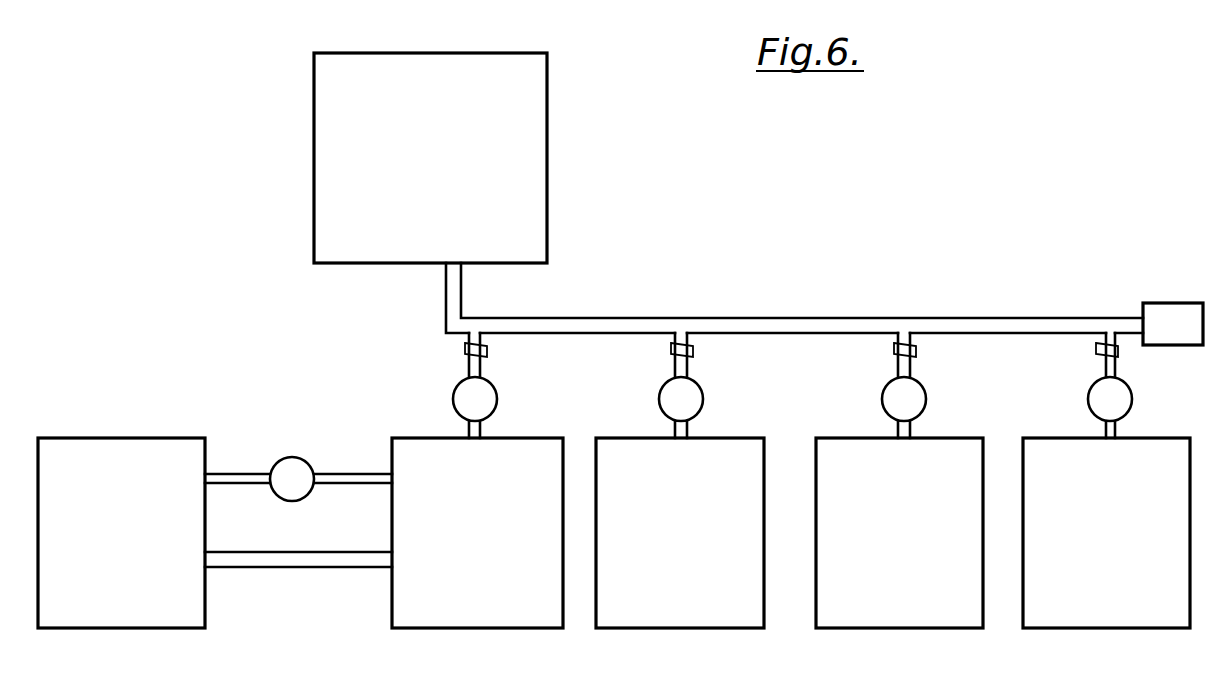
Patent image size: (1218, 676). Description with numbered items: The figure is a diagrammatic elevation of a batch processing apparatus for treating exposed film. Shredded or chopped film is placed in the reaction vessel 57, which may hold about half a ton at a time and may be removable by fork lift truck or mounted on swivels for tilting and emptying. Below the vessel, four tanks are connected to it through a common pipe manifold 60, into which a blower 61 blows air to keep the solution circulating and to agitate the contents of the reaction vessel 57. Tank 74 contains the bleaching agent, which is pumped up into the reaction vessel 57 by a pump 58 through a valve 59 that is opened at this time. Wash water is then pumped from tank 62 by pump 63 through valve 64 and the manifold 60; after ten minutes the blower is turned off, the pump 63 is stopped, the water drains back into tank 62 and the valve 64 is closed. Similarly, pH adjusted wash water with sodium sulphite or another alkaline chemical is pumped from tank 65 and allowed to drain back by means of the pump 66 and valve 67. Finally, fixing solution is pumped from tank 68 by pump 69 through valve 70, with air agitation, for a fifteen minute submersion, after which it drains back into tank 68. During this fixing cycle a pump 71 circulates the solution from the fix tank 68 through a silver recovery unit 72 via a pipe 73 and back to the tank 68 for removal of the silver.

The reaction vessel 57 is at (324, 128).
The pump 58 is at (1098, 398).
The valve 59 is at (1095, 351).
The manifold 60 is at (614, 322).
The blower 61 is at (1170, 318).
The tank 62 is at (862, 456).
The pump 63 is at (891, 398).
The valve 64 is at (893, 350).
The tank 65 is at (735, 452).
The pump 66 is at (668, 398).
The valve 67 is at (668, 350).
The tank 68 is at (398, 589).
The pump 69 is at (460, 398).
The valve 70 is at (488, 351).
The pump 71 is at (296, 472).
The silver recovery unit 72 is at (183, 450).
The pipe 73 is at (324, 566).
The tank 74 is at (1063, 452).